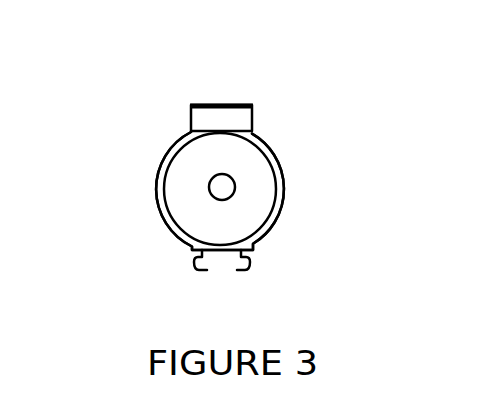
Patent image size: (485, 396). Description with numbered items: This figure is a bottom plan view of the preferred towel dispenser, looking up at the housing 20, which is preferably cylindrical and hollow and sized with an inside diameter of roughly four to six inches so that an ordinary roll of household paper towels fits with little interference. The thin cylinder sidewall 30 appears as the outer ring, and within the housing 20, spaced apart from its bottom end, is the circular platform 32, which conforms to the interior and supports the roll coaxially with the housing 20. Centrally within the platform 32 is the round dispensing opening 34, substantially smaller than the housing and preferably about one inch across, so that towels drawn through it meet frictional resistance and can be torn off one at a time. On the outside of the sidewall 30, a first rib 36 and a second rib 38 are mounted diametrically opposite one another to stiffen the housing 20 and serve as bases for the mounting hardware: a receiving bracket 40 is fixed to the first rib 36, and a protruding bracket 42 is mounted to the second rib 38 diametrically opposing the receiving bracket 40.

The housing 20 is at (278, 216).
The cylinder sidewall 30 is at (163, 160).
The platform 32 is at (248, 162).
The dispensing opening 34 is at (226, 186).
The first rib 36 is at (193, 252).
The second rib 38 is at (237, 131).
The receiving bracket 40 is at (245, 272).
The protruding bracket 42 is at (220, 105).